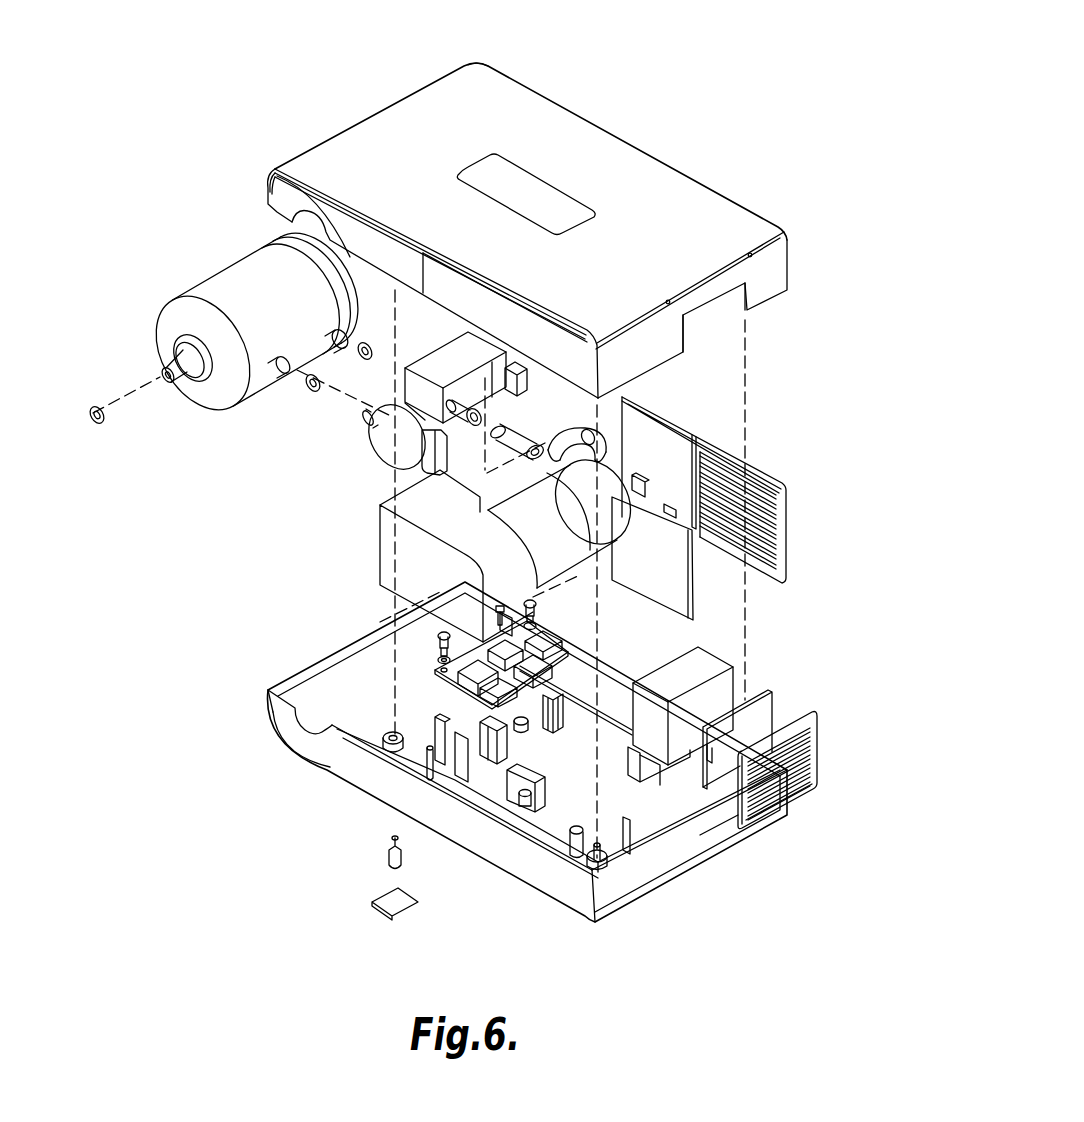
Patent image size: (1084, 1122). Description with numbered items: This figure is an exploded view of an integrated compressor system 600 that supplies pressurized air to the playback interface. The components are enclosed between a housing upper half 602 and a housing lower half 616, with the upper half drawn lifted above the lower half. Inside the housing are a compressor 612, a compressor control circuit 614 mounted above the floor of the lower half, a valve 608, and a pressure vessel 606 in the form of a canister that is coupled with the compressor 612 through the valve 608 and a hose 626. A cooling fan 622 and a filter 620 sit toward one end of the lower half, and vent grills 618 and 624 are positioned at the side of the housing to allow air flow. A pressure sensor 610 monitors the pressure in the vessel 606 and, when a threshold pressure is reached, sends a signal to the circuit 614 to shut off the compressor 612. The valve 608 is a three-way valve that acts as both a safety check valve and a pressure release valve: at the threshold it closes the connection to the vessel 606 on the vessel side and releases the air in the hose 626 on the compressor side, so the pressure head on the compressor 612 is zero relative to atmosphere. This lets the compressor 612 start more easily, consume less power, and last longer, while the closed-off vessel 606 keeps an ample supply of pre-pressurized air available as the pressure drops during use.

The integrated compressor system 600 is at (664, 92).
The housing upper half 602 is at (376, 118).
The pressure vessel 606 is at (224, 272).
The valve 608 is at (440, 348).
The pressure sensor 610 is at (372, 444).
The compressor 612 is at (378, 545).
The compressor control circuit 614 is at (444, 662).
The housing lower half 616 is at (336, 783).
The vent grill 618 is at (816, 748).
The filter 620 is at (776, 702).
The cooling fan 622 is at (700, 660).
The vent grill 624 is at (757, 464).
The hose 626 is at (584, 428).